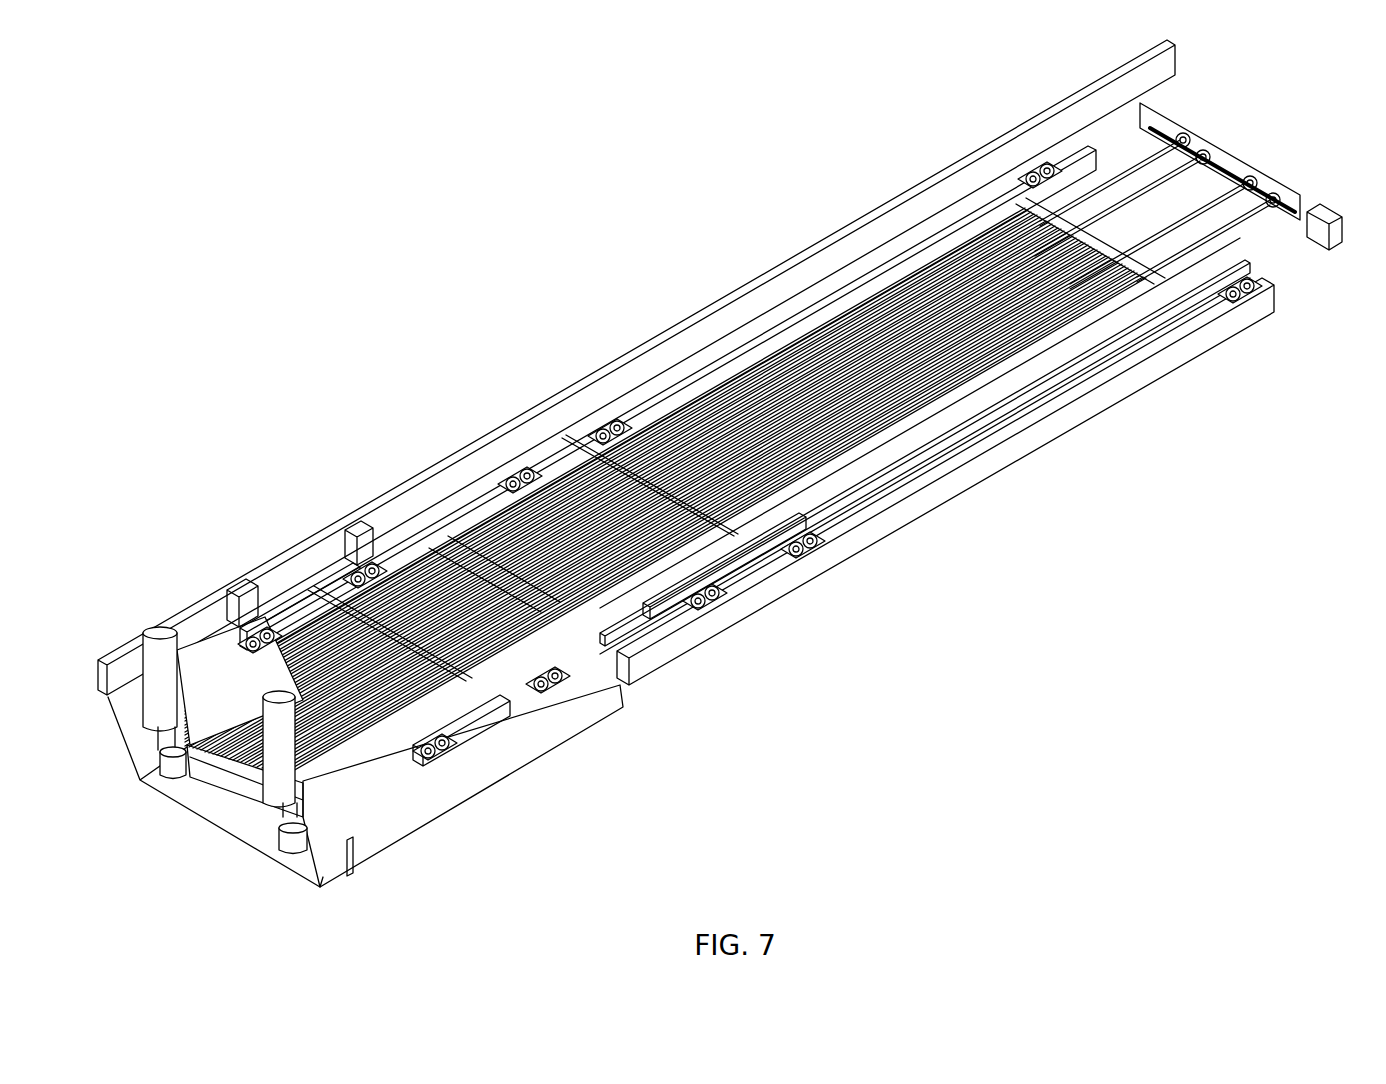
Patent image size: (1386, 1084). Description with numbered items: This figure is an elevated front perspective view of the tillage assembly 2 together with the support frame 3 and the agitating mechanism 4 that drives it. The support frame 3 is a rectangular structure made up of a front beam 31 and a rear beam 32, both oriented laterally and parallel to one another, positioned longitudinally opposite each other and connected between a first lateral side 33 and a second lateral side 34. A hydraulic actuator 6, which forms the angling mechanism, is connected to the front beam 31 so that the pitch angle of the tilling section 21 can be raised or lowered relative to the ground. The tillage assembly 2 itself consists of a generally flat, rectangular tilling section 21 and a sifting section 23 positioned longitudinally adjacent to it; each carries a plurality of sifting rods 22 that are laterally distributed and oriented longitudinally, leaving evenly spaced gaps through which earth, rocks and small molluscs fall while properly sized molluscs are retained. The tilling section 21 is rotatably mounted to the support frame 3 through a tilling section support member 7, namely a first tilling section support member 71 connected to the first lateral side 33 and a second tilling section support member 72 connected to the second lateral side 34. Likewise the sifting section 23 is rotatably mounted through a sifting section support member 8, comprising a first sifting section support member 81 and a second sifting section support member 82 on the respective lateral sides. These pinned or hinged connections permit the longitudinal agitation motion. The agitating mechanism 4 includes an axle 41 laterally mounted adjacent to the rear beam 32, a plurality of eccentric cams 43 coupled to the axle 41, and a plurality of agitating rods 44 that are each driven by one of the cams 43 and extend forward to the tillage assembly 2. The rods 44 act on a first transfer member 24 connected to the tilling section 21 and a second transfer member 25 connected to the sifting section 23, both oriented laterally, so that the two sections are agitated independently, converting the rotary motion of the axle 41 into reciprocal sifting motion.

The tillage assembly 2 is at (868, 705).
The tilling section 21 is at (483, 810).
The sifting rods 22 is at (262, 700).
The sifting section 23 is at (1025, 520).
The first transfer member 24 is at (335, 533).
The second transfer member 25 is at (540, 452).
The support frame 3 is at (311, 390).
The front beam 31 is at (170, 765).
The rear beam 32 is at (1188, 118).
The first lateral side 33 is at (902, 455).
The second lateral side 34 is at (638, 335).
The agitating mechanism 4 is at (1333, 517).
The axle 41 is at (1225, 167).
The cams 43 is at (1268, 185).
The agitating rods 44 is at (1110, 180).
The hydraulic actuator 6 is at (165, 640).
The tilling section support member 7 is at (270, 610).
The first tilling section support member 71 is at (487, 738).
The second tilling section support member 72 is at (300, 606).
The sifting section support member 8 is at (513, 468).
The first sifting section support member 81 is at (748, 593).
The second sifting section support member 82 is at (565, 443).